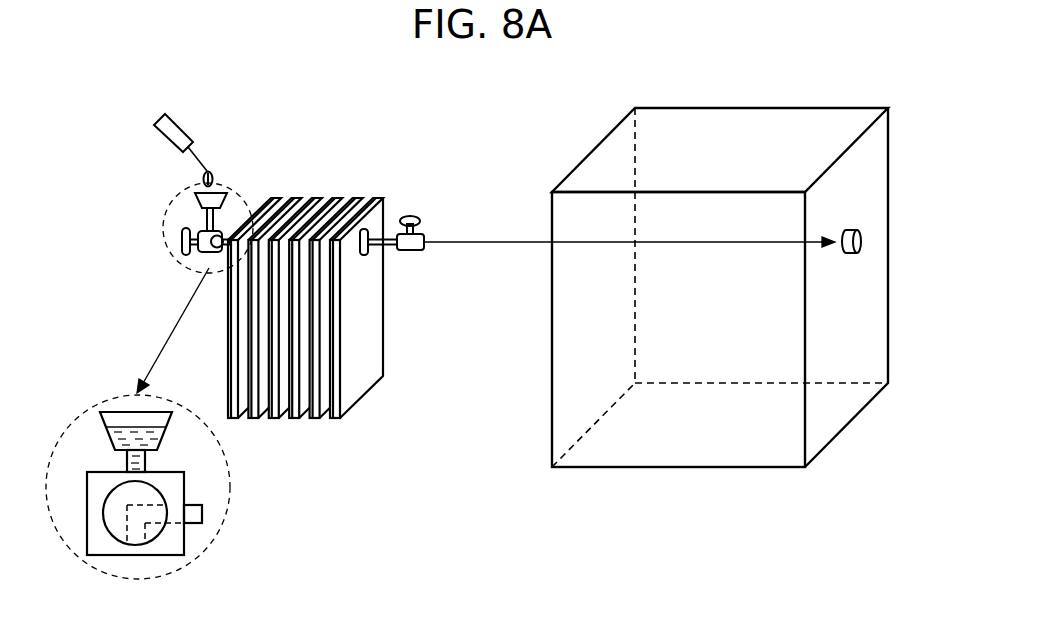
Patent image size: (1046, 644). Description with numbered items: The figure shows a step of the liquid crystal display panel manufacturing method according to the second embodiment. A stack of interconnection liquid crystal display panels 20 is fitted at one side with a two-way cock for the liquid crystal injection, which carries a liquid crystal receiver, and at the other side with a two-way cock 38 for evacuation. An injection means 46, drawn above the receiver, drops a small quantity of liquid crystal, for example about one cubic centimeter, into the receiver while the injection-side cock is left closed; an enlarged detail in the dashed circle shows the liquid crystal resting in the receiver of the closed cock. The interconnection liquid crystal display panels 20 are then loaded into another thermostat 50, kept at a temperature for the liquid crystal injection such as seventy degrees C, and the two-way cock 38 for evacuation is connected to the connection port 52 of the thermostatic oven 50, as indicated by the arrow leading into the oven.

The interconnection liquid crystal display panels 20 is at (336, 420).
The two-way cock for evacuation 38 is at (410, 256).
The injection means 46 is at (154, 126).
The thermostat 50 is at (715, 469).
The connection port 52 is at (855, 228).